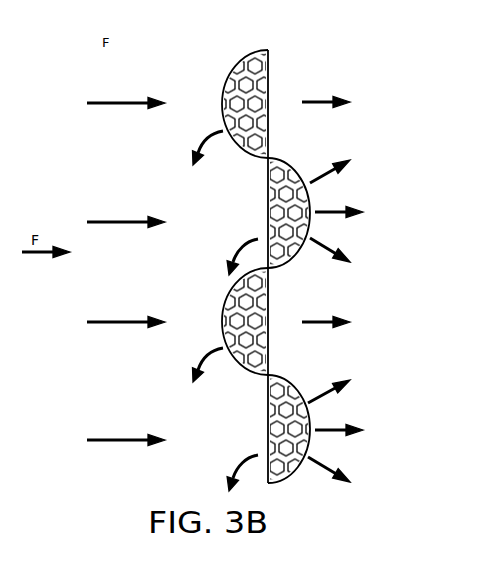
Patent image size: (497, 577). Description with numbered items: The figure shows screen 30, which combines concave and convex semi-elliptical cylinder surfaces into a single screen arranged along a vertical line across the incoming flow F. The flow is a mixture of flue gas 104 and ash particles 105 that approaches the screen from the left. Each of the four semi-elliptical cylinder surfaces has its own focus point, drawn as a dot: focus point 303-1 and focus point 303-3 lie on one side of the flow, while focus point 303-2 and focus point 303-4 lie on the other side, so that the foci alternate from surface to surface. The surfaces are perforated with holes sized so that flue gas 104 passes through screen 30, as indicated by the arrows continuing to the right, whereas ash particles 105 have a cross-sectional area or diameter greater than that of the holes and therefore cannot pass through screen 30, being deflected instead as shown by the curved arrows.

The screen 30 is at (213, 51).
The flue gas 104 is at (117, 99).
The ash particles 105 is at (212, 134).
The focus point 303-1 is at (273, 102).
The focus point 303-2 is at (258, 210).
The focus point 303-3 is at (273, 321).
The focus point 303-4 is at (258, 430).